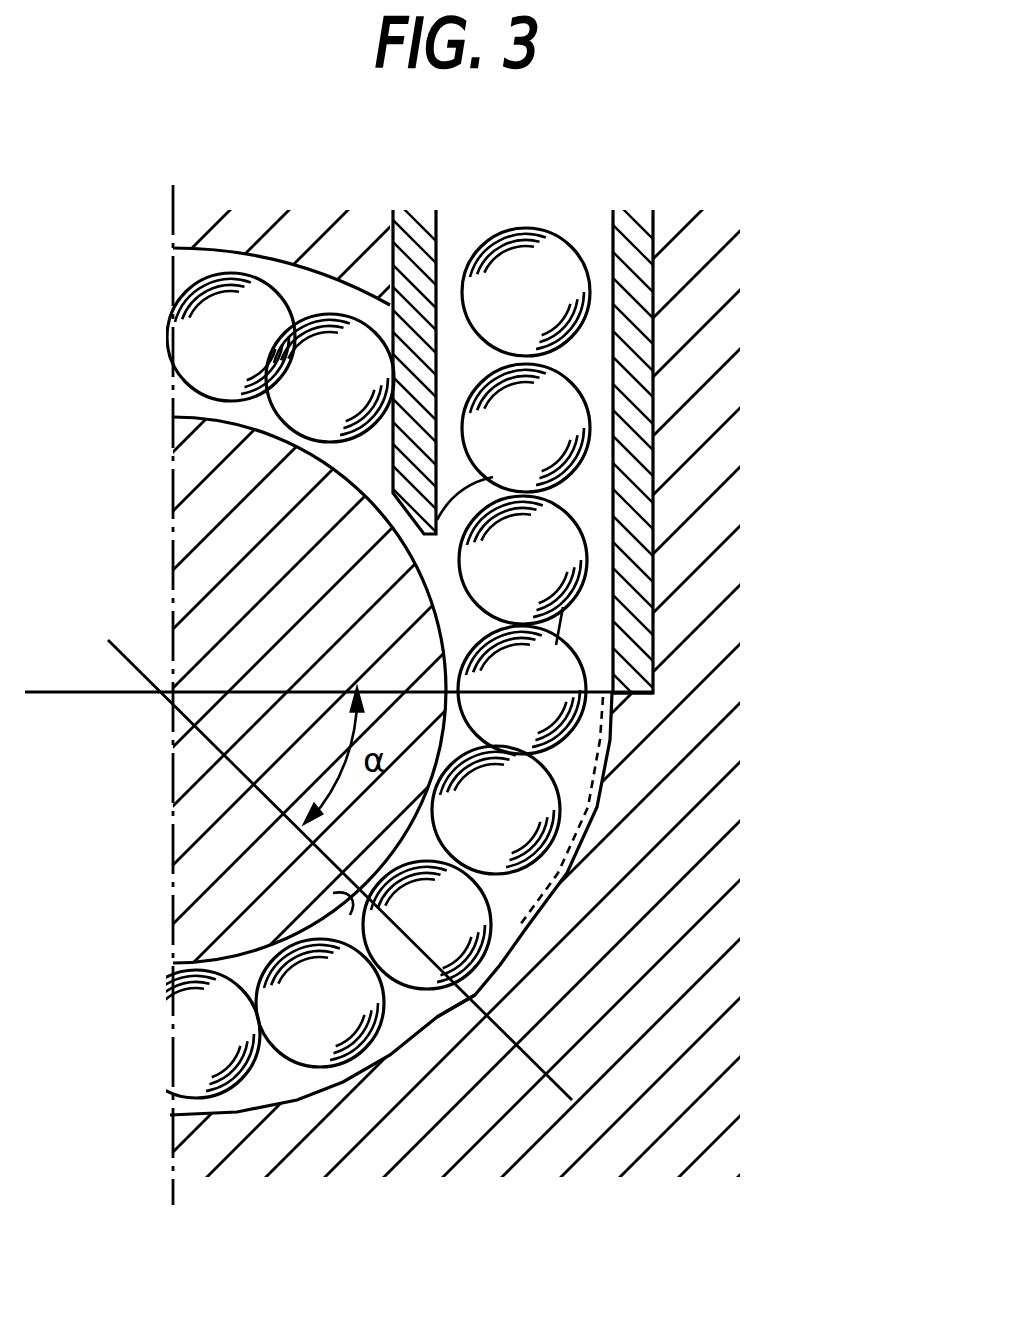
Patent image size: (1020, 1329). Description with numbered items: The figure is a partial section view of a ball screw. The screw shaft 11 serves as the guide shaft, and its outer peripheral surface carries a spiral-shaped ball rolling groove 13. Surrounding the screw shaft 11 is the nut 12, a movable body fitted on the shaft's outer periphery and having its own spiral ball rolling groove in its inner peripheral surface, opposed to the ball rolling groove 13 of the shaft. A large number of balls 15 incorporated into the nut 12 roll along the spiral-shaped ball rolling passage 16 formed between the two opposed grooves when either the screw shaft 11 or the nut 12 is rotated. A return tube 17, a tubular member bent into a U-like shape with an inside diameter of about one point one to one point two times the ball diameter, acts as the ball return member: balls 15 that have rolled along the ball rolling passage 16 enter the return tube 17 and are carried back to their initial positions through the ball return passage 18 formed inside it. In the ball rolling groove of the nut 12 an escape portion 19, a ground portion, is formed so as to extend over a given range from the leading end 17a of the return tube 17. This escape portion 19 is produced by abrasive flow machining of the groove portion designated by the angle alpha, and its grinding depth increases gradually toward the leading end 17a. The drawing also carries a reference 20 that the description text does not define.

The screw shaft 11 is at (248, 636).
The nut 12 is at (632, 1070).
The ball rolling groove 13 is at (353, 917).
The balls 15 is at (297, 1033).
The ball rolling passage 16 is at (397, 997).
The return tube 17 is at (640, 288).
The leading end of the return tube 17a is at (640, 677).
The ball return passage 18 is at (585, 352).
The escape portion 19 is at (610, 741).
The raceway bottom 20 is at (430, 1012).